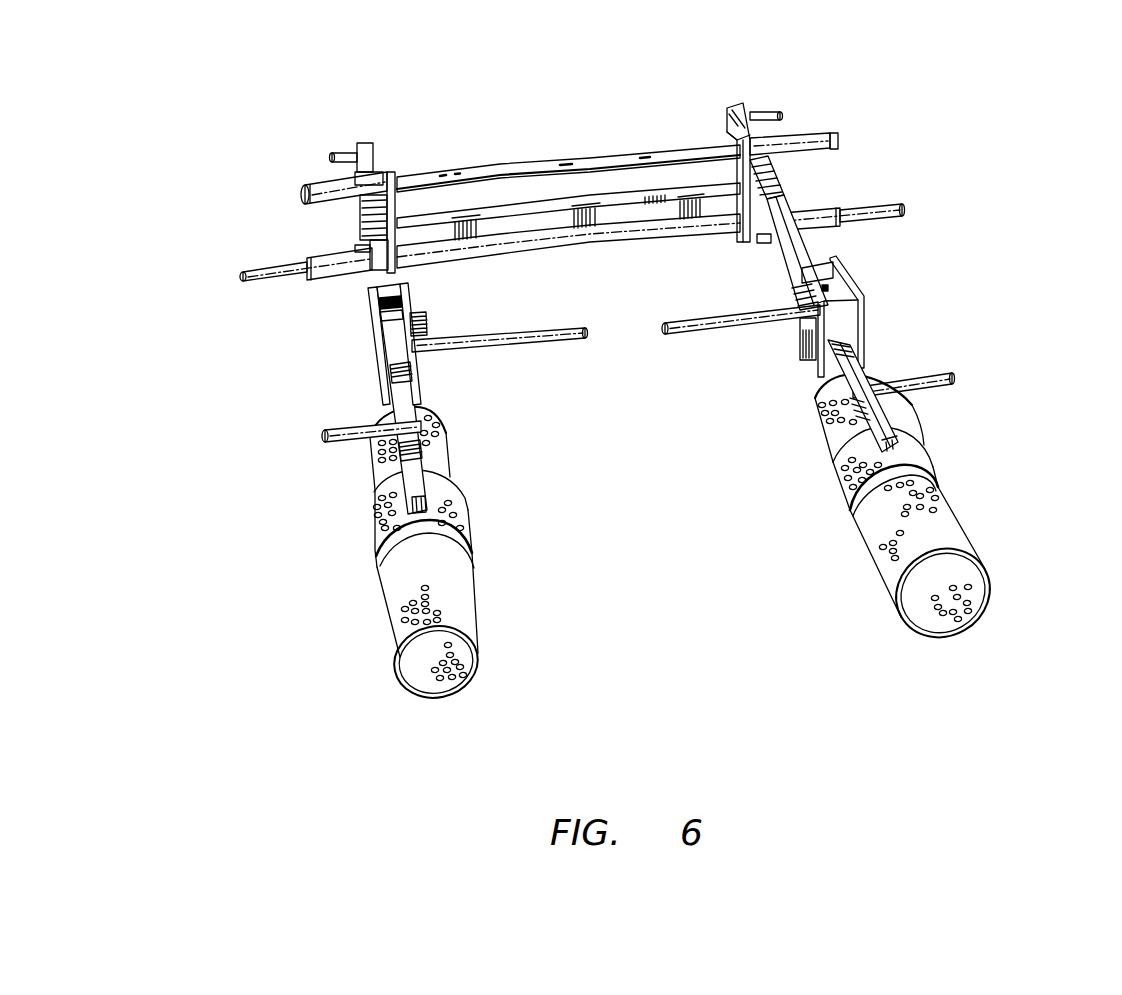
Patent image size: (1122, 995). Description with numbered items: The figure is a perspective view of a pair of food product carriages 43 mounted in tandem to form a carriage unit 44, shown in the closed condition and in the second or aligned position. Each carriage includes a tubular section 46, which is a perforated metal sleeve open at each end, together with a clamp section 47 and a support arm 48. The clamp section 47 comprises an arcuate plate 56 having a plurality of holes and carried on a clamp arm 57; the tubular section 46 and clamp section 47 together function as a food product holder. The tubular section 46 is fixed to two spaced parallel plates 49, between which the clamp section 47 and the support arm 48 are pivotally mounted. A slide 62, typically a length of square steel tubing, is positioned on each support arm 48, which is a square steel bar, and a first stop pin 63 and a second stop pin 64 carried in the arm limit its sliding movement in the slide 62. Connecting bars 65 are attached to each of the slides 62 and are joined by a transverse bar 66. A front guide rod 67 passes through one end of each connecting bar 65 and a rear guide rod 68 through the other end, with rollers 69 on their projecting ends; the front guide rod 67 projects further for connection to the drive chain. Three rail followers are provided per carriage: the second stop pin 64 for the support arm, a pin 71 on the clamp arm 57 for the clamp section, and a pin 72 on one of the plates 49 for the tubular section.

The food product carriage 43 is at (361, 524).
The carriage unit 44 is at (490, 189).
The tubular section 46 is at (957, 533).
The clamp section 47 is at (919, 458).
The support arm 48 is at (808, 255).
The plates 49 is at (853, 293).
The arcuate plate 56 is at (842, 490).
The clamp arm 57 is at (863, 364).
The slide 62 is at (372, 210).
The first stop pin 63 is at (767, 245).
The second stop pin 64 is at (342, 150).
The connecting bars 65 is at (392, 173).
The transverse bar 66 is at (573, 214).
The front guide rod 67 is at (538, 248).
The rear guide rod 68 is at (503, 179).
The rollers 69 is at (803, 134).
The pin 71 is at (337, 427).
The pin 72 is at (481, 342).